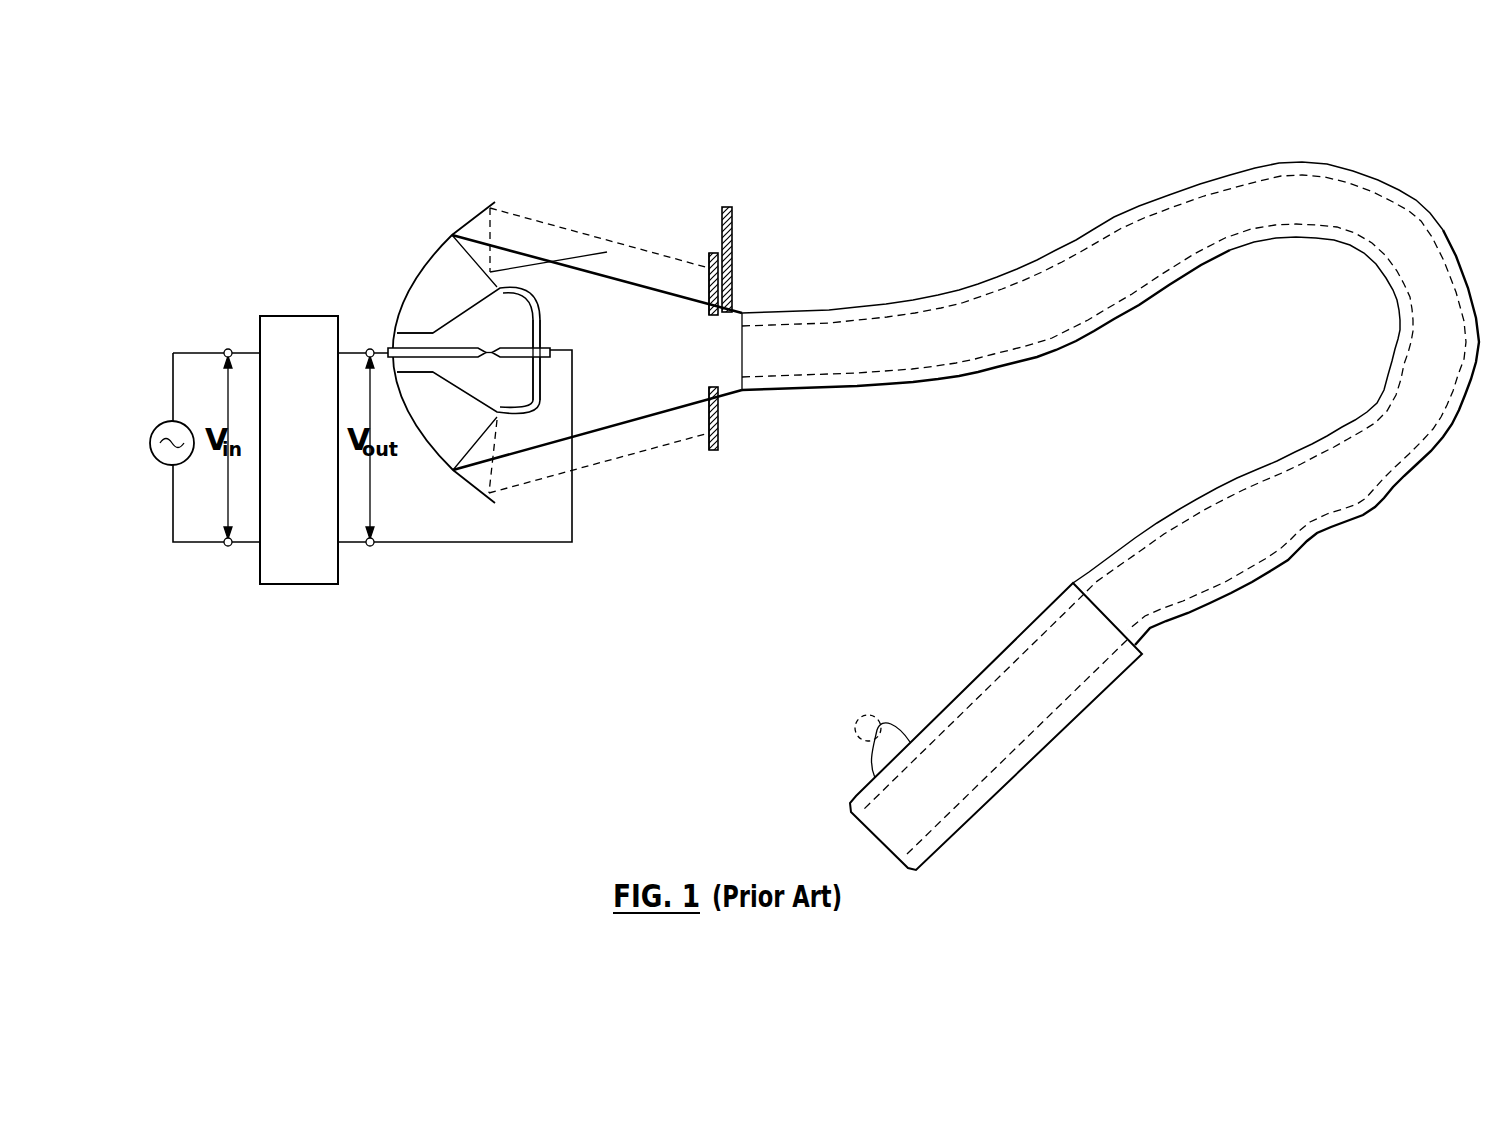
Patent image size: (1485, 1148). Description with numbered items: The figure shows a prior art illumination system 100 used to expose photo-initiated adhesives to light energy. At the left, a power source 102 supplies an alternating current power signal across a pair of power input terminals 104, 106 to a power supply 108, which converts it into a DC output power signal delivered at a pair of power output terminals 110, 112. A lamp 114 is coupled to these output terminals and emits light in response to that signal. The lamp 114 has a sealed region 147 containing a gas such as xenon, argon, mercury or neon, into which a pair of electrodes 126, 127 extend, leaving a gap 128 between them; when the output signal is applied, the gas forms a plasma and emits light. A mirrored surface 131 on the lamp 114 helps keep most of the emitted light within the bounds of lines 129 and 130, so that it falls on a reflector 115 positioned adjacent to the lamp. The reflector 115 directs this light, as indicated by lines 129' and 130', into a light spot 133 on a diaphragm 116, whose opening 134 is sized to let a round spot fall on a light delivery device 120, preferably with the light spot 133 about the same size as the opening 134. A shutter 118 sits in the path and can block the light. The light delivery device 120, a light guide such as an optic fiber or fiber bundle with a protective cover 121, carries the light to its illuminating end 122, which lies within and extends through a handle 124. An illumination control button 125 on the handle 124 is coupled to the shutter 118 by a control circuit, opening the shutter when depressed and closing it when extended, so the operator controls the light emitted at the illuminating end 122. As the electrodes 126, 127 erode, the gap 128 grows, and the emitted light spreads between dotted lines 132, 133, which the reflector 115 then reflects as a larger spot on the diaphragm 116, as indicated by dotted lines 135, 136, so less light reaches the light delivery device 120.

The illumination system 100 is at (581, 633).
The power source 102 is at (172, 420).
The power input terminal 104 is at (228, 337).
The power input terminal 106 is at (228, 558).
The power supply 108 is at (324, 457).
The power output terminal 110 is at (372, 336).
The power output terminal 112 is at (370, 559).
The lamp 114 is at (412, 349).
The reflector 115 is at (431, 256).
The diaphragm 116 is at (712, 253).
The shutter 118 is at (727, 207).
The light delivery device 120 is at (835, 343).
The protective cover 121 is at (947, 297).
The illuminating end 122 is at (912, 833).
The handle 124 is at (1087, 703).
The illumination control button 125 is at (885, 725).
The electrode 126 is at (430, 330).
The electrode 127 is at (541, 340).
The gap 128 is at (488, 360).
The line 129 is at (526, 219).
The line 129' is at (597, 267).
The line 130 is at (472, 499).
The line 130' is at (597, 442).
The mirrored surface 131 is at (548, 372).
The dotted line 132 is at (607, 252).
The light spot 133 is at (712, 297).
The opening 134 is at (722, 345).
The dotted line 135 is at (585, 234).
The dotted line 136 is at (602, 463).
The sealed region 147 is at (525, 331).